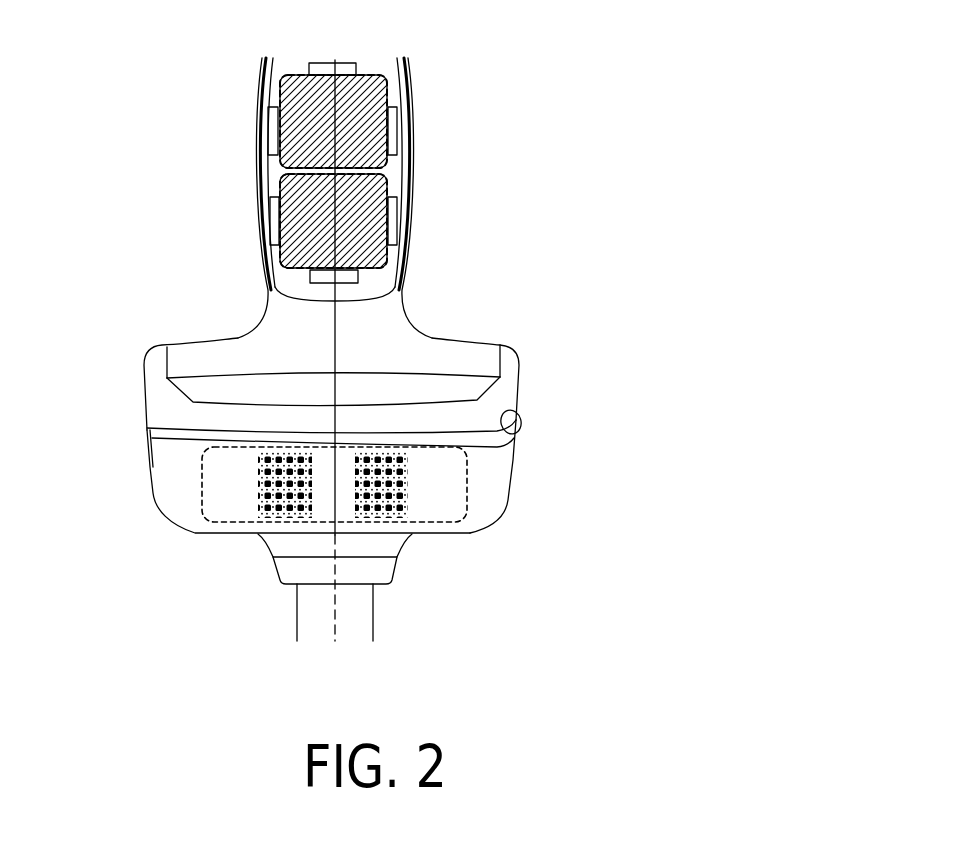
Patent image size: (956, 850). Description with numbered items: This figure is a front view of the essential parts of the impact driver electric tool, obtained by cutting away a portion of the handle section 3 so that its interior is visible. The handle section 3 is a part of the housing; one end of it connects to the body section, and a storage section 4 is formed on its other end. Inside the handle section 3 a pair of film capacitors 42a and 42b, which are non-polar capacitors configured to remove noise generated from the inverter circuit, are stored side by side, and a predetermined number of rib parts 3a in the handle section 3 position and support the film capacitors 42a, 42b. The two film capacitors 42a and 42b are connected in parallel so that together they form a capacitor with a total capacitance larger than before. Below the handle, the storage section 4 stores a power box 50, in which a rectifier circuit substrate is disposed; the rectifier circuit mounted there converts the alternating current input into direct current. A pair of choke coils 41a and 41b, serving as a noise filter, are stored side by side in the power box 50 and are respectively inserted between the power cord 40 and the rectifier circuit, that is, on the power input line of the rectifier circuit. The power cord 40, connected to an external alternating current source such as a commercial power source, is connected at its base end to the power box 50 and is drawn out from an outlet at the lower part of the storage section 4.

The handle section 3 is at (415, 97).
The rib parts 3a is at (345, 63).
The film capacitor 42a is at (273, 79).
The film capacitor 42b is at (273, 268).
The storage section 4 is at (512, 458).
The power box 50 is at (467, 505).
The choke coil 41a is at (258, 510).
The choke coil 41b is at (410, 510).
The power cord 40 is at (295, 626).